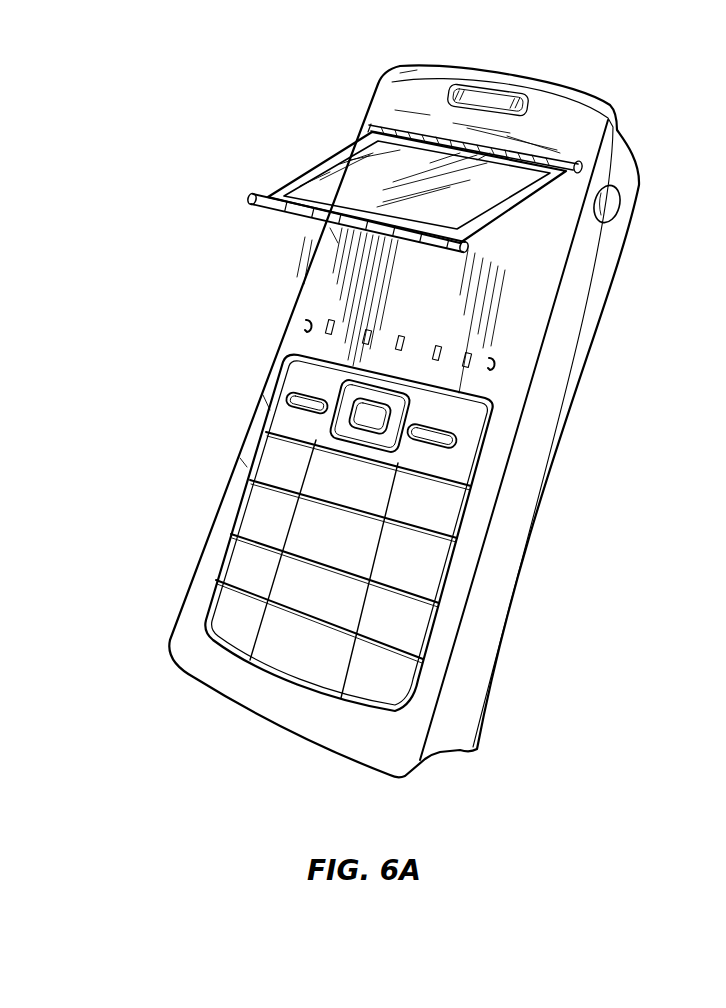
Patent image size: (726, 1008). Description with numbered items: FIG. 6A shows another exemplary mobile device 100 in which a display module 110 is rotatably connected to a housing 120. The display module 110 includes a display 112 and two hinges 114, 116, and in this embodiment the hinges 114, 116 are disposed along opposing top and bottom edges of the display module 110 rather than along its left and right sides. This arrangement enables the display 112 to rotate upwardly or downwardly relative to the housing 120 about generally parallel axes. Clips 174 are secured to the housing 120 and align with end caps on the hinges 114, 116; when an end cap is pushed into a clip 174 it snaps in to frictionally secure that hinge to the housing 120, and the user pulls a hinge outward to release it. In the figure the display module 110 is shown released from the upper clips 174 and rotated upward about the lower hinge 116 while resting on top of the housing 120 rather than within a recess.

The mobile device 100 is at (184, 189).
The display module 110 is at (480, 233).
The display 112 is at (373, 182).
The hinge 114 is at (413, 132).
The hinge 116 is at (296, 213).
The housing 120 is at (522, 474).
The clip 174 is at (305, 325).